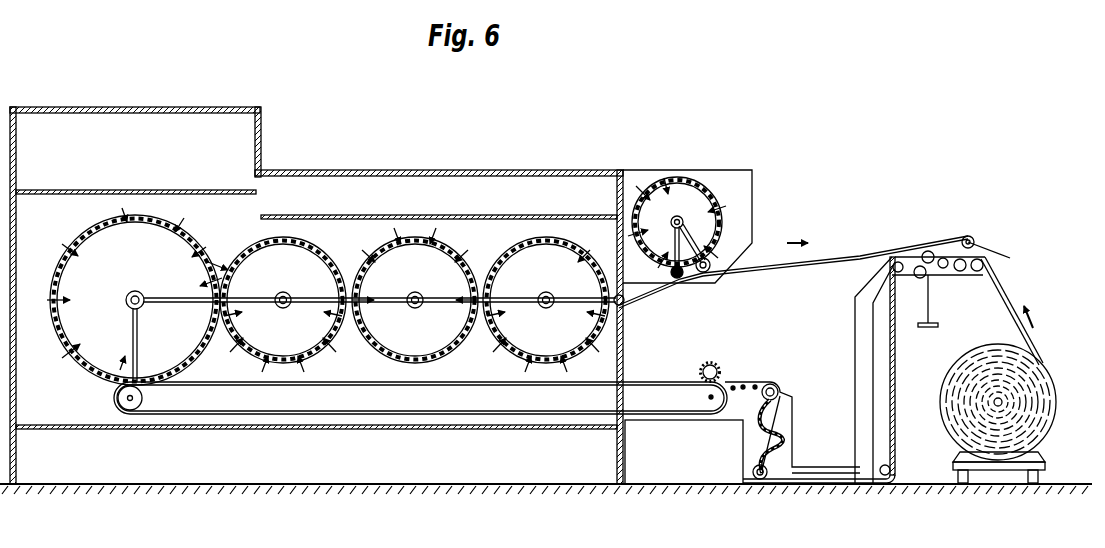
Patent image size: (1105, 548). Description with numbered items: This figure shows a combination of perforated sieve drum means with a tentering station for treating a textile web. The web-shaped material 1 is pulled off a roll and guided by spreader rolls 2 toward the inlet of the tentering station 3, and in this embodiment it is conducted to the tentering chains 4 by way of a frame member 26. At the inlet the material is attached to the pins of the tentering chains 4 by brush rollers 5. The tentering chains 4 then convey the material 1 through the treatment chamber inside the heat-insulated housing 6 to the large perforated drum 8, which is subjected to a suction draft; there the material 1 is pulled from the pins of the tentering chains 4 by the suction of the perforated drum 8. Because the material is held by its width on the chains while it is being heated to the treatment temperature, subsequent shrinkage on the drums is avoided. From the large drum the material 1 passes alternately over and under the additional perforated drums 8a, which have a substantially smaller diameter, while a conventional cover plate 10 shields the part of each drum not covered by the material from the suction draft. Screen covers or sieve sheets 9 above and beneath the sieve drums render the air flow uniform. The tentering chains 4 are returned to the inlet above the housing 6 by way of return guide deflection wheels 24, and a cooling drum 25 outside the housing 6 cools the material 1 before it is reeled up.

The web-shaped material 1 is at (1005, 292).
The spreader rolls 2 is at (764, 450).
The tentering station 3 is at (758, 382).
The tentering chains 4 is at (674, 414).
The brush rollers 5 is at (711, 362).
The heat-insulated housing 6 is at (218, 108).
The perforated drum 8 is at (137, 226).
The additional perforated drums 8a is at (283, 355).
The sieve sheets 9 is at (103, 190).
The cover plate 10 is at (190, 350).
The return guide deflection wheels 24 is at (136, 406).
The cooling drum 25 is at (683, 197).
The frame member 26 is at (913, 262).